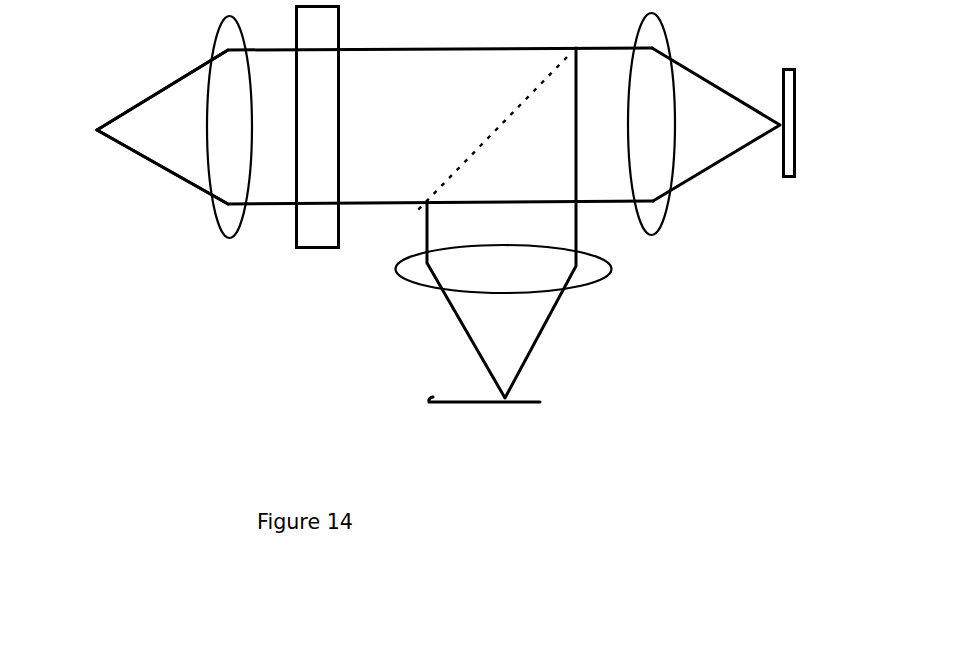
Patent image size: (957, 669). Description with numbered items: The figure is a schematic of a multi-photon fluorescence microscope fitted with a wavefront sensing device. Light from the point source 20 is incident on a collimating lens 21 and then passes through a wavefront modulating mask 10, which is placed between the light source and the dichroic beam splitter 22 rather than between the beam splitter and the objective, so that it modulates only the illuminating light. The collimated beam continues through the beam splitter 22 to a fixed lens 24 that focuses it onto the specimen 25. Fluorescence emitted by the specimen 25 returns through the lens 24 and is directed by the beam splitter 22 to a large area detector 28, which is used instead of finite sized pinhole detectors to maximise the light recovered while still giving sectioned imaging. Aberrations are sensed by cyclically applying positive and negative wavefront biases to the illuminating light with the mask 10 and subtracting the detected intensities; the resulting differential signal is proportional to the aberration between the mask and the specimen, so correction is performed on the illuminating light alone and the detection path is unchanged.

The point source 20 is at (142, 127).
The collimating lens 21 is at (232, 222).
The wavefront modulating mask 10 is at (322, 230).
The dichroic beam splitter 22 is at (521, 104).
The fixed lens 24 is at (661, 214).
The specimen 25 is at (790, 165).
The large area detector 28 is at (461, 395).